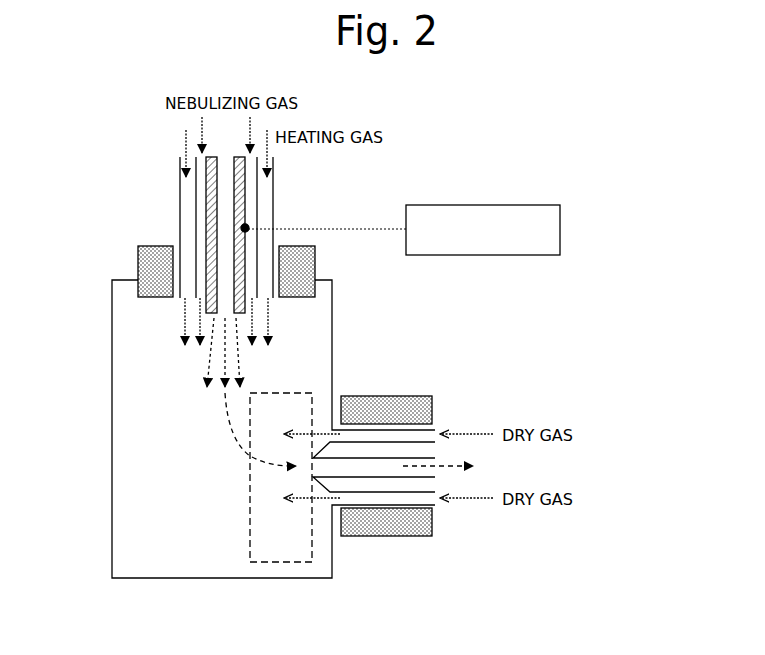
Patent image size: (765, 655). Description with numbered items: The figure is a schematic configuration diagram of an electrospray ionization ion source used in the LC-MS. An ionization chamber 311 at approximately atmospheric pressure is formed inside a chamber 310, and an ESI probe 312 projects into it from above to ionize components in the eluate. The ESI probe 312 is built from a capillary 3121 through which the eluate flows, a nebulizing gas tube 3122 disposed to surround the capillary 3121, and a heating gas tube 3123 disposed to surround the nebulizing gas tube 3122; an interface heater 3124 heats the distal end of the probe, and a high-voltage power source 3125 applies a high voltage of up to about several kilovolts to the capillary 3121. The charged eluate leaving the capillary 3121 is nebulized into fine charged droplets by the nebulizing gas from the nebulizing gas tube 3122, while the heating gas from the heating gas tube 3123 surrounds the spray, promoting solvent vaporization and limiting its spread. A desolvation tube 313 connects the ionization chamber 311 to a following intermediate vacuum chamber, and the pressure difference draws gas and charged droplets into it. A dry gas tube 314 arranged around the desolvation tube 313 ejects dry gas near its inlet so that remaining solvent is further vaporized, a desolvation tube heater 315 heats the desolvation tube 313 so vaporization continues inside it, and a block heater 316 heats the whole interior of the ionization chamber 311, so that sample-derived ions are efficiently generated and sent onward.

The chamber 310 is at (112, 312).
The ionization chamber 311 is at (136, 366).
The ESI probe 312 is at (208, 232).
The capillary 3121 is at (210, 198).
The nebulizing gas tube 3122 is at (200, 216).
The heating gas tube 3123 is at (275, 200).
The interface heater 3124 is at (315, 266).
The high-voltage power source 3125 is at (560, 218).
The desolvation tube 313 is at (392, 445).
The dry gas tube 314 is at (393, 502).
The desolvation tube heater 315 is at (432, 403).
The block heater 316 is at (248, 485).